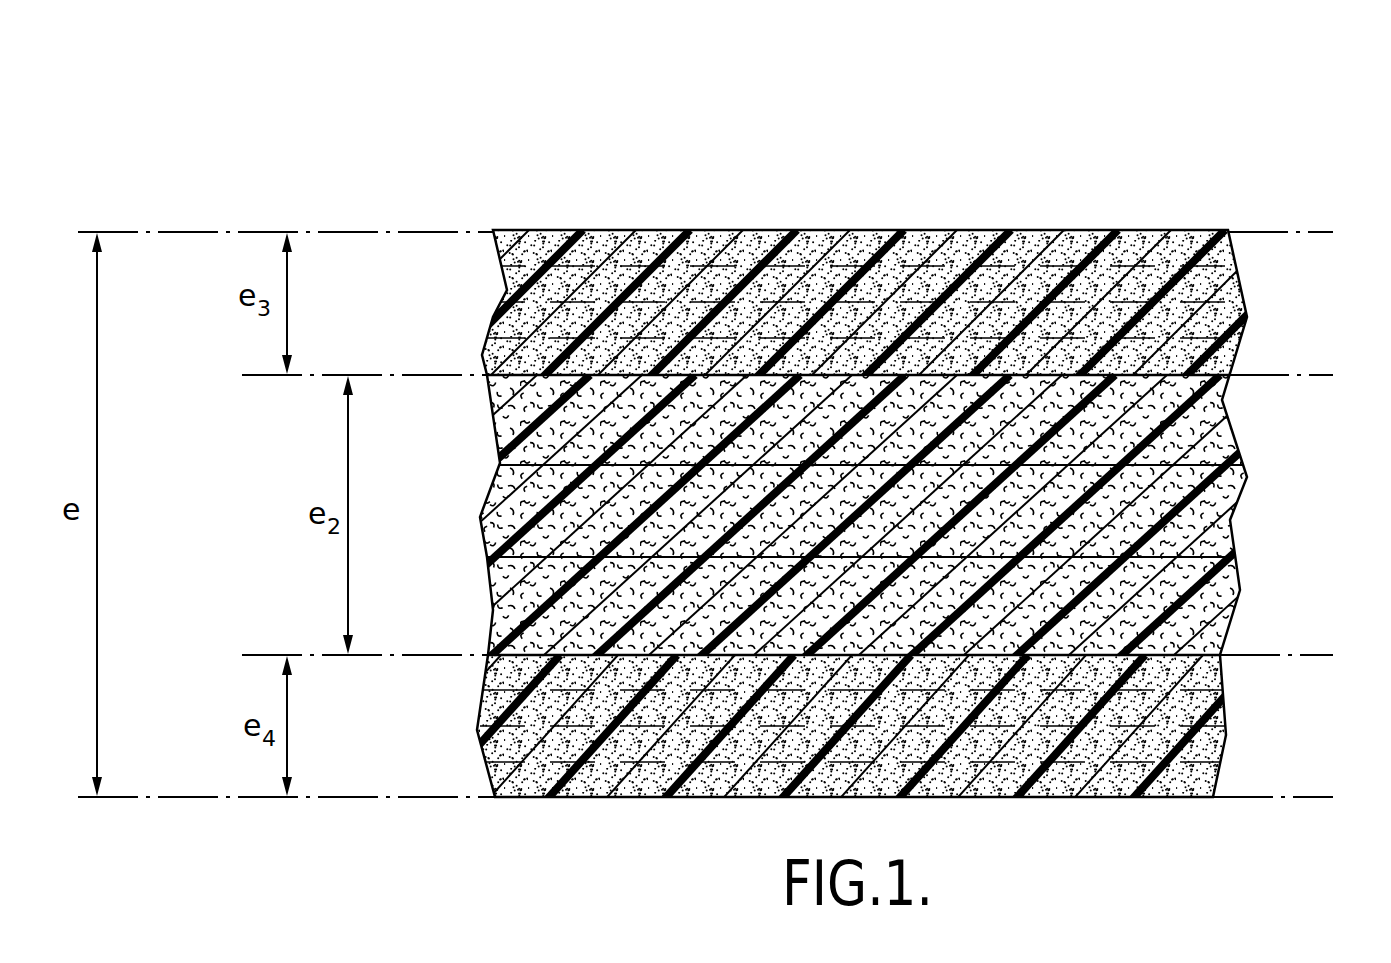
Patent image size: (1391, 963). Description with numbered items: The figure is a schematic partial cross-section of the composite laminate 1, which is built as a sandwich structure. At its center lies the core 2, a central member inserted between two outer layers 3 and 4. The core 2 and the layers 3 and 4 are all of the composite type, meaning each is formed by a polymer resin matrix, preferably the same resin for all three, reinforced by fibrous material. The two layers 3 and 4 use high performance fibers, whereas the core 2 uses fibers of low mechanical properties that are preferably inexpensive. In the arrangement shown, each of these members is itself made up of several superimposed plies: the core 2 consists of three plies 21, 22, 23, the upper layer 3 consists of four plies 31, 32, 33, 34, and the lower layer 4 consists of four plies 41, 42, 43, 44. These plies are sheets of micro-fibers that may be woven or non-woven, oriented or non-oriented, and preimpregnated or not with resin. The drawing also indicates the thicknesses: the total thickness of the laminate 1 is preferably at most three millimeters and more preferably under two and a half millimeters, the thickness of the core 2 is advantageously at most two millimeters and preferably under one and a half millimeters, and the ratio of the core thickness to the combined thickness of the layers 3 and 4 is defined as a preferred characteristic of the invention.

The composite laminate 1 is at (958, 202).
The core 2 is at (773, 518).
The core ply 21 is at (1203, 430).
The core ply 22 is at (1205, 503).
The core ply 23 is at (1180, 597).
The layer 3 is at (878, 272).
The layer ply 31 is at (597, 250).
The layer ply 32 is at (547, 285).
The layer ply 33 is at (518, 315).
The layer ply 34 is at (1337, 225).
The layer 4 is at (878, 754).
The layer ply 41 is at (520, 672).
The layer ply 42 is at (500, 701).
The layer ply 43 is at (530, 747).
The layer ply 44 is at (558, 772).